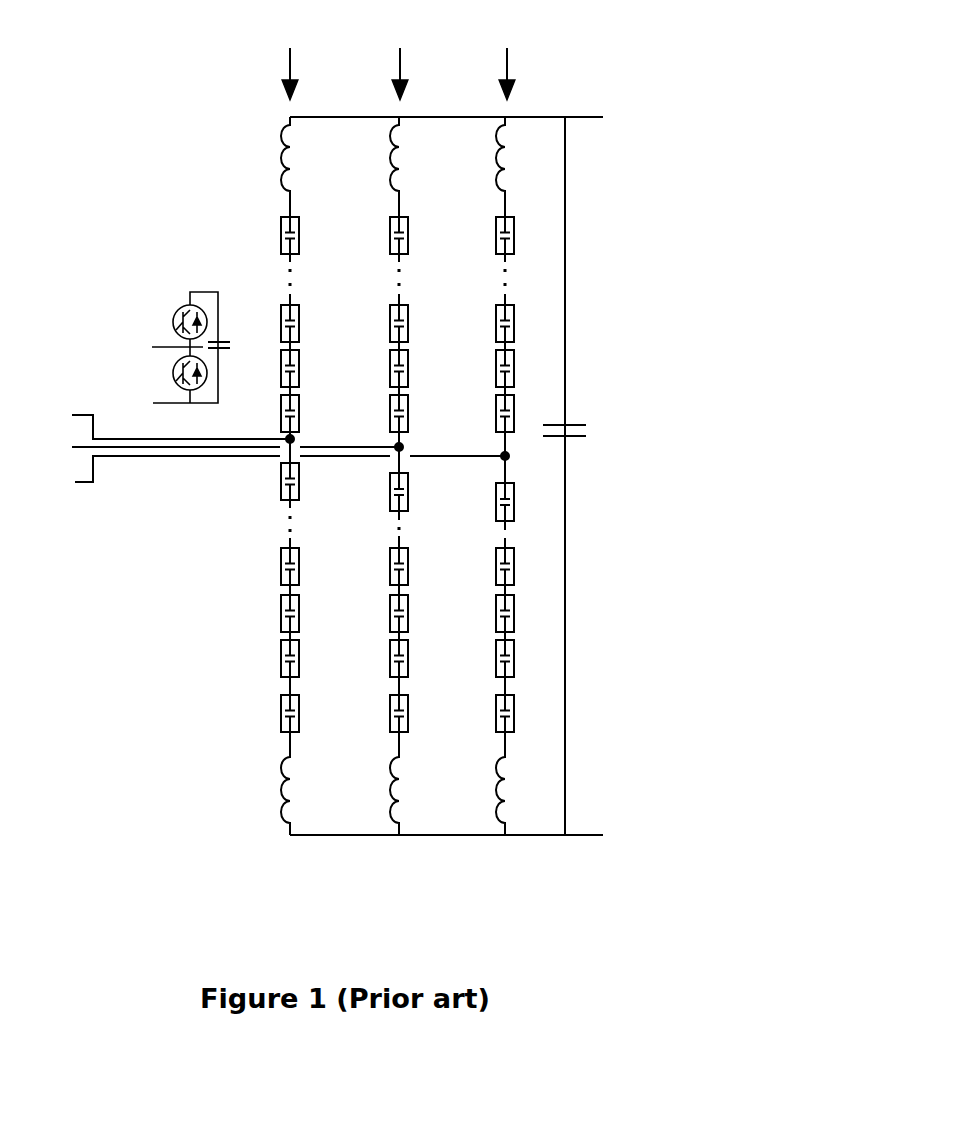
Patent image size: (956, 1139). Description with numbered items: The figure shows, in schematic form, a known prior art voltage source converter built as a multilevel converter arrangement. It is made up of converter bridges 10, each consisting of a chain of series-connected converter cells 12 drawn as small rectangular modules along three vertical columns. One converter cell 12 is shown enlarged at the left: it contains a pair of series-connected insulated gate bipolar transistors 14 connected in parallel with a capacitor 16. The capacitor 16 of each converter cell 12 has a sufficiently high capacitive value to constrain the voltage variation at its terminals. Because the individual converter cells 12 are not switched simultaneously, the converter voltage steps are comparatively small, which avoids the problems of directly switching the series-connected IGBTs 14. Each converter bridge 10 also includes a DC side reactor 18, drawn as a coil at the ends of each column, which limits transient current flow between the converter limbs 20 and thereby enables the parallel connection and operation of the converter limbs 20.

The converter bridge 10 is at (473, 647).
The converter cell 12 is at (157, 268).
The insulated gate bipolar transistor 14 is at (165, 378).
The capacitor 16 is at (223, 337).
The DC side reactor 18 is at (503, 820).
The converter limb 20 is at (398, 58).